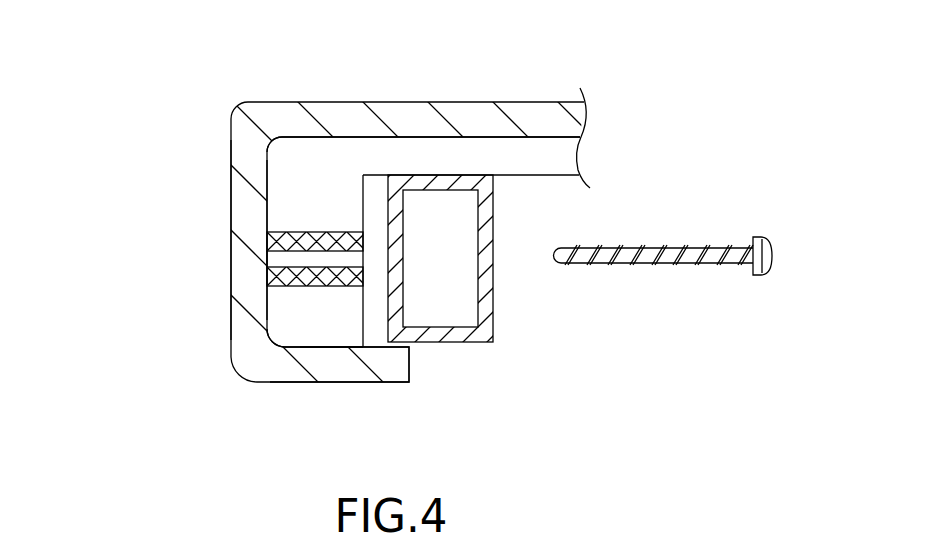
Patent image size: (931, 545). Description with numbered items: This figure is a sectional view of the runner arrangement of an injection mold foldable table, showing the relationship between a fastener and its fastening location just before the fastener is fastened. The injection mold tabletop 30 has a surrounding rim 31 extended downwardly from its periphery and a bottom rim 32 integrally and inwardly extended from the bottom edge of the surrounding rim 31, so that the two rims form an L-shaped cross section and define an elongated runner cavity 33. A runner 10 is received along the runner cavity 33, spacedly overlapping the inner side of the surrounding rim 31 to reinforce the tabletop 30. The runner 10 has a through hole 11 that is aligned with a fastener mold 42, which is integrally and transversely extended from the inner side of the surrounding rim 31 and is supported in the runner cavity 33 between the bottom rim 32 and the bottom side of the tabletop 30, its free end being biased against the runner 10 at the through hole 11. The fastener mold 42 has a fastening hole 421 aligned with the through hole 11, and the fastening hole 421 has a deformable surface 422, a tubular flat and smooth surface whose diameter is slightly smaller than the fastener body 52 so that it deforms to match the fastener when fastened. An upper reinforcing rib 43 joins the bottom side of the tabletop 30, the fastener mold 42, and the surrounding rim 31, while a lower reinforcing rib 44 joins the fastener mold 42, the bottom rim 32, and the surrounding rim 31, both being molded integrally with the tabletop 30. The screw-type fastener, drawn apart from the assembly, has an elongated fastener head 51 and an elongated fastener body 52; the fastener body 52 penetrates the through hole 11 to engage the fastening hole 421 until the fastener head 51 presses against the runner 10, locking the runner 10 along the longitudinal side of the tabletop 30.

The runner 10 is at (485, 211).
The through hole 11 is at (498, 267).
The injection mold tabletop 30 is at (540, 117).
The surrounding rim 31 is at (240, 212).
The bottom rim 32 is at (390, 368).
The runner cavity 33 is at (431, 160).
The fastener mold 42 is at (267, 273).
The fastening hole 421 is at (340, 236).
The deformable surface 422 is at (330, 284).
The upper reinforcing rib 43 is at (298, 182).
The lower reinforcing rib 44 is at (293, 322).
The fastener head 51 is at (763, 257).
The fastener body 52 is at (661, 262).